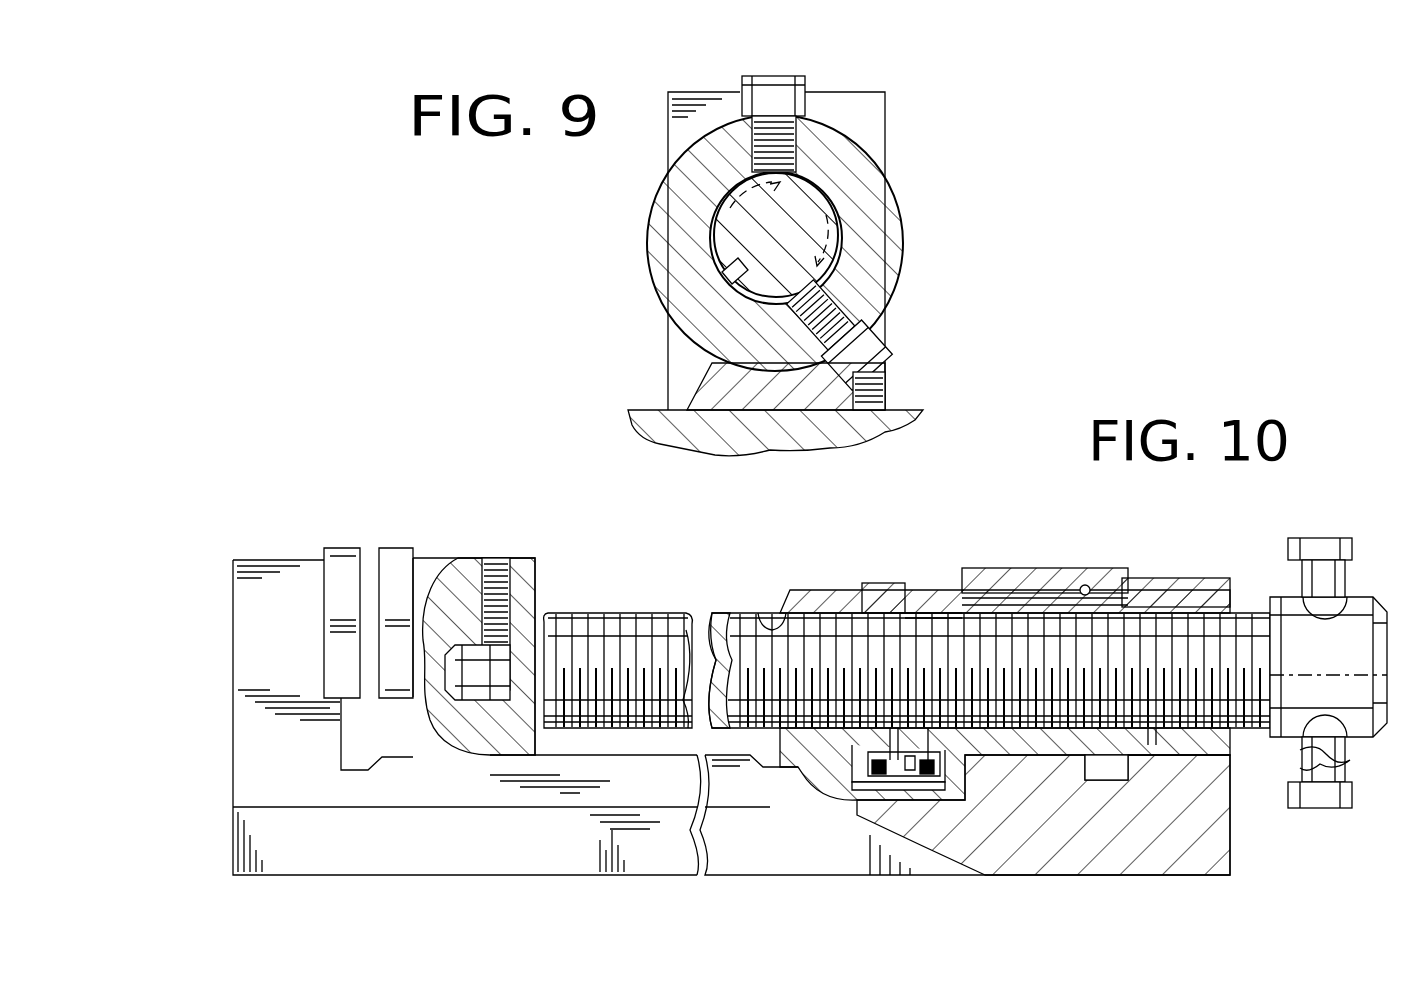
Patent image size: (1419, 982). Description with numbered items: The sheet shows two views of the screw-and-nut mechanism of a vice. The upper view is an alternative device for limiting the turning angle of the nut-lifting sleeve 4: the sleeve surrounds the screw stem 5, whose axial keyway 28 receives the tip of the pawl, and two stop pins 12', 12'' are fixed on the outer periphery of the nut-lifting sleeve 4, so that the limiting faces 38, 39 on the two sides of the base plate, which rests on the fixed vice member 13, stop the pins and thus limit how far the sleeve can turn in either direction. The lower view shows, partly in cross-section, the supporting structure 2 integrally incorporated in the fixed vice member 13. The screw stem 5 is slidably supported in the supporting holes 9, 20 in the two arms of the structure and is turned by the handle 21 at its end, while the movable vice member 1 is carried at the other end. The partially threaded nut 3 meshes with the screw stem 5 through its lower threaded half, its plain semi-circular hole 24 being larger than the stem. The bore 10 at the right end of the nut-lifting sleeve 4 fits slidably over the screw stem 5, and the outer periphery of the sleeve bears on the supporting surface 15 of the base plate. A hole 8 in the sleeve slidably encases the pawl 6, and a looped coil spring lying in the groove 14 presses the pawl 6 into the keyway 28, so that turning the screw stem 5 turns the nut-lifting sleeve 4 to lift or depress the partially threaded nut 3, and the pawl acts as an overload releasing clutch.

In FIG. 10, the movable vice member 1 is at (432, 565).
In FIG. 10, the supporting structure 2 is at (1200, 590).
In FIG. 10, the partially threaded nut 3 is at (1020, 567).
In FIG. 9, the nut-lifting sleeve 4 is at (895, 222).
In FIG. 10, the nut-lifting sleeve 4 is at (872, 590).
In FIG. 9, the screw stem 5 is at (712, 226).
In FIG. 10, the screw stem 5 is at (607, 615).
In FIG. 10, the pawl 6 is at (895, 740).
In FIG. 10, the hole 8 is at (932, 740).
In FIG. 10, the supporting hole 9 is at (760, 625).
In FIG. 10, the bore 10 is at (948, 626).
In FIG. 9, the stop pin 12' is at (881, 332).
In FIG. 9, the stop pin 12'' is at (821, 101).
In FIG. 9, the fixed vice member 13 is at (665, 440).
In FIG. 10, the fixed vice member 13 is at (240, 588).
In FIG. 10, the groove 14 is at (912, 588).
In FIG. 10, the supporting surface 15 is at (1022, 770).
In FIG. 10, the supporting hole 20 is at (1153, 732).
In FIG. 10, the handle 21 is at (1328, 550).
In FIG. 10, the semi-circular hole 24 is at (1088, 586).
In FIG. 9, the axial keyway 28 is at (742, 288).
In FIG. 9, the limiting face 38 is at (706, 386).
In FIG. 9, the limiting face 39 is at (888, 394).